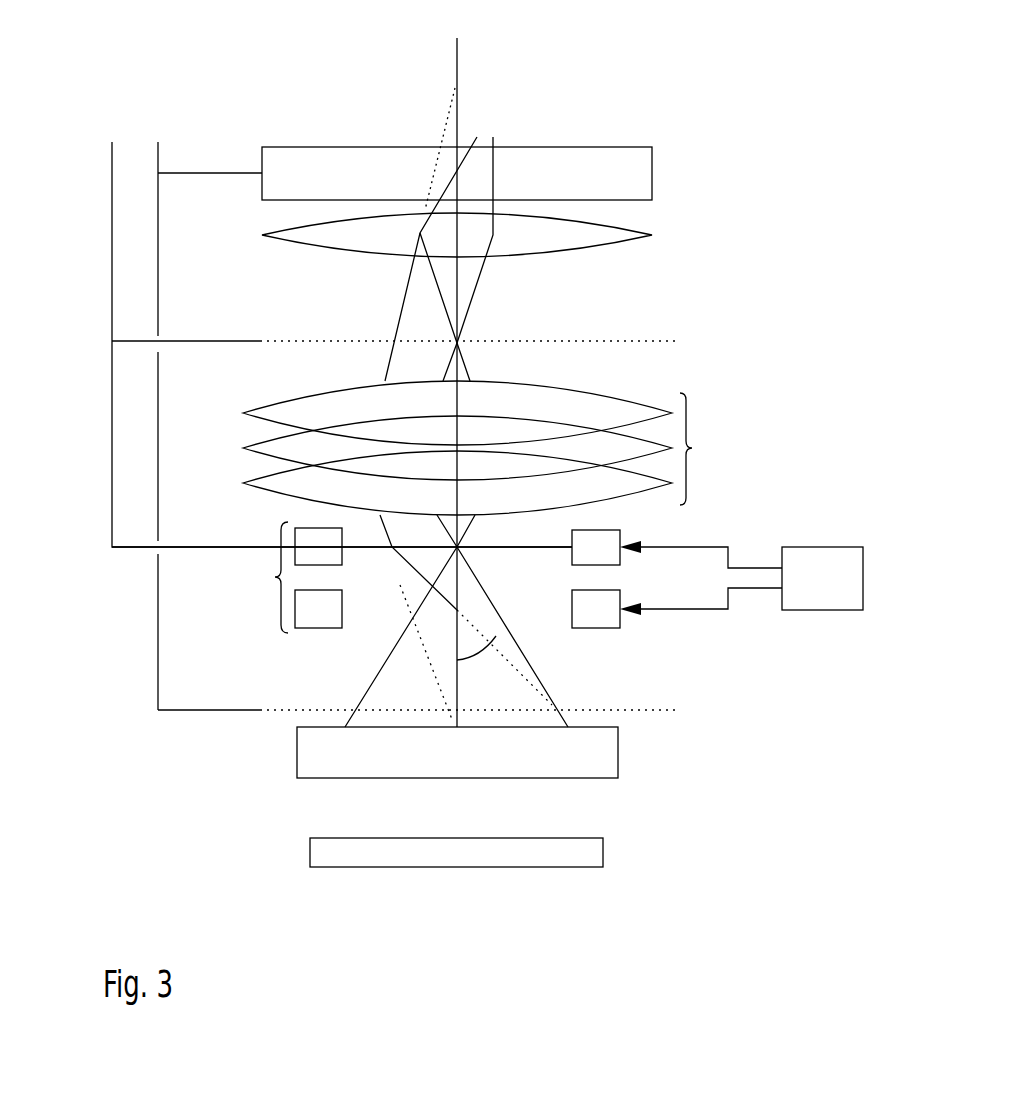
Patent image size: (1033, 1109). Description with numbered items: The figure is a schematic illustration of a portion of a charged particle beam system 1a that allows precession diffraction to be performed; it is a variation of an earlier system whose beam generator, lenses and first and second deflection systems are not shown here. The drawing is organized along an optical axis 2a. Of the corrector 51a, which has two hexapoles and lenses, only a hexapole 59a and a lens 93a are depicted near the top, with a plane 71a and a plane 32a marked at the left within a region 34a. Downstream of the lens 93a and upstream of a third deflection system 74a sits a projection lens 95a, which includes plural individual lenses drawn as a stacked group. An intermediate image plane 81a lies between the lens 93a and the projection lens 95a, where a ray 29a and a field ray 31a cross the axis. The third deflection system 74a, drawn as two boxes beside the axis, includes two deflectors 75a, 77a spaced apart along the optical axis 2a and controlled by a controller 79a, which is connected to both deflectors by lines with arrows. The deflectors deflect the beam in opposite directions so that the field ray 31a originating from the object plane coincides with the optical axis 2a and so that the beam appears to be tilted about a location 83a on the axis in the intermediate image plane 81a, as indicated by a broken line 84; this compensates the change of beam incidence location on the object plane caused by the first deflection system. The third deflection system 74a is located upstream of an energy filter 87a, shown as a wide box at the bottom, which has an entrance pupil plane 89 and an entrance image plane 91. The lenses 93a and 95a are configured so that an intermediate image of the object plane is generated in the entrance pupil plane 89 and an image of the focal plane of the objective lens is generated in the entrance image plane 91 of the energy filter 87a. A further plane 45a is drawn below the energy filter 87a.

The charged particle beam system 1a is at (752, 82).
The optical axis 2a is at (457, 50).
The light ray 29a is at (482, 273).
The field ray 31a is at (400, 305).
The plane 32a is at (158, 268).
The region 34a is at (112, 225).
The object plane 45a is at (603, 853).
The corrector 51a is at (214, 112).
The hexapole 59a is at (652, 173).
The plane 71a is at (198, 173).
The third deflection system 74a is at (289, 577).
The deflector 75a is at (607, 530).
The deflector 77a is at (593, 628).
The controller 79a is at (838, 591).
The intermediate image plane 81a is at (190, 345).
The location 83a is at (450, 722).
The broken line 84 is at (387, 653).
The energy filter 87a is at (618, 753).
The entrance pupil plane 89 is at (193, 547).
The entrance image plane 91 is at (200, 710).
The lens 93a is at (616, 250).
The projection lens 95a is at (485, 448).